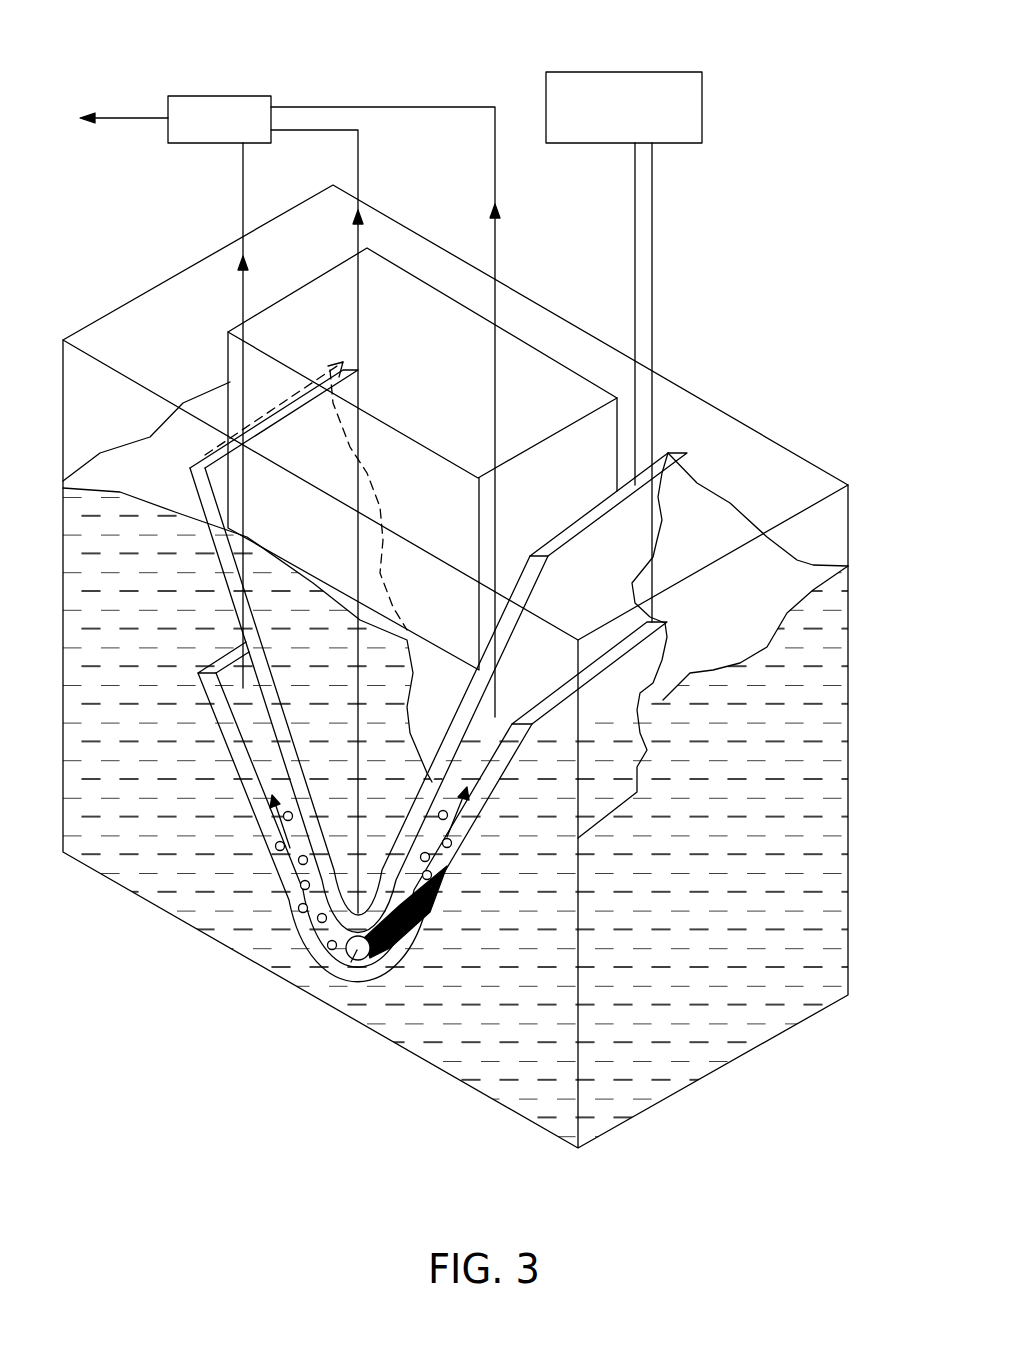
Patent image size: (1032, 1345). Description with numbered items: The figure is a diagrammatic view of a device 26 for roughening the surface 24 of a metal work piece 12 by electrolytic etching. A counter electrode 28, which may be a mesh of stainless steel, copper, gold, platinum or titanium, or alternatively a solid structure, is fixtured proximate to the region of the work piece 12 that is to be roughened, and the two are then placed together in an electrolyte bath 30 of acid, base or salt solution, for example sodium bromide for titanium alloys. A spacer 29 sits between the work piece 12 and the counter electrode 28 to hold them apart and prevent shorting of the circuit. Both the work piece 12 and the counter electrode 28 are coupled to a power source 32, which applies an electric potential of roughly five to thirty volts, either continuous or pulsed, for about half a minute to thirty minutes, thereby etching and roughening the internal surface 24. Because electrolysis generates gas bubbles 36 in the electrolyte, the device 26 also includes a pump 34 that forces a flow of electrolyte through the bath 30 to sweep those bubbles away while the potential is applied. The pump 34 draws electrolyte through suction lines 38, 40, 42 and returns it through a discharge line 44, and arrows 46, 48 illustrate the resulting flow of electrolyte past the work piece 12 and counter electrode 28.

The work piece 12 is at (283, 910).
The surface 24 is at (262, 750).
The device 26 is at (765, 212).
The counter electrode 28 is at (215, 453).
The spacer 29 is at (357, 962).
The electrolyte bath 30 is at (655, 1090).
The power source 32 is at (702, 95).
The pump 34 is at (228, 96).
The gas bubbles 36 is at (425, 298).
The suction line 38 is at (242, 185).
The suction line 40 is at (358, 170).
The suction line 42 is at (400, 107).
The discharge line 44 is at (128, 120).
The arrow 46 is at (283, 830).
The arrow 48 is at (518, 880).